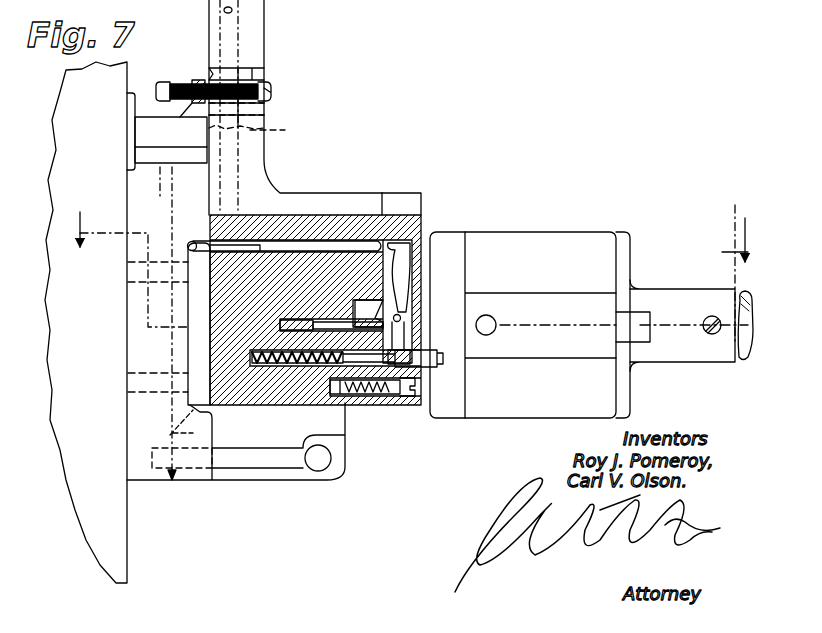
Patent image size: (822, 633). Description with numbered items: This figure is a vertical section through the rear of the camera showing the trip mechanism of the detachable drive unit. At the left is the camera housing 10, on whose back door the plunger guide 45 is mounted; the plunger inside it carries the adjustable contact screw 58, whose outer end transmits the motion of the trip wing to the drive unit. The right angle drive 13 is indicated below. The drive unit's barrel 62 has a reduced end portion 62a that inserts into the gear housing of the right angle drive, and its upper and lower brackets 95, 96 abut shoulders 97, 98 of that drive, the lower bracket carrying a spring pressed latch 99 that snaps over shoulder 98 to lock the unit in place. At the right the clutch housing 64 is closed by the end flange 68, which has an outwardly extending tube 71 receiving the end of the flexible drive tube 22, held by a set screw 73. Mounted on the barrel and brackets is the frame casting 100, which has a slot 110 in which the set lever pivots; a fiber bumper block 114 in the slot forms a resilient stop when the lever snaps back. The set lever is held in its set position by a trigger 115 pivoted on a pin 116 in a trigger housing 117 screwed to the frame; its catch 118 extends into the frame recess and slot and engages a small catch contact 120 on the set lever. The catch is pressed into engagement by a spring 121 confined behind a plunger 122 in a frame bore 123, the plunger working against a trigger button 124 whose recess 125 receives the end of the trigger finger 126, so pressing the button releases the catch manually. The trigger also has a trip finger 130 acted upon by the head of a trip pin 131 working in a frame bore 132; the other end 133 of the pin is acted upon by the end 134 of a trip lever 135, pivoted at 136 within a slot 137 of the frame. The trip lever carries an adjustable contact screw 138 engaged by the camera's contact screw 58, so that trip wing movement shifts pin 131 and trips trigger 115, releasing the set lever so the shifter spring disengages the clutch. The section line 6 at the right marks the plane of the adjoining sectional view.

The camera housing 10 is at (131, 81).
The right angle drive 13 is at (150, 487).
The flexible drive tube 22 is at (737, 353).
The plunger guide 45 is at (158, 133).
The adjustable contact screw 58 is at (176, 83).
The barrel 62 is at (200, 372).
The reduced end portion of barrel 62a is at (148, 312).
The clutch housing 64 is at (547, 250).
The end flange 68 is at (634, 262).
The outwardly extending tube 71 is at (666, 300).
The set screw 73 is at (710, 318).
The upper bracket 95 is at (188, 178).
The lower bracket 96 is at (157, 436).
The shoulder 97 is at (193, 238).
The shoulder 98 is at (193, 424).
The spring pressed latch 99 is at (250, 462).
The frame casting 100 is at (270, 165).
The slot 110 is at (345, 395).
The fiber bumper block 114 is at (285, 322).
The trigger 115 is at (404, 312).
The pin 116 is at (414, 322).
The trigger housing 117 is at (424, 226).
The catch 118 is at (402, 300).
The catch contact 120 is at (300, 353).
The spring 121 is at (283, 400).
The plunger 122 is at (315, 402).
The frame bore 123 is at (256, 400).
The trigger button 124 is at (438, 360).
The recess 125 is at (420, 381).
The trigger finger 126 is at (410, 342).
The trip finger 130 is at (399, 246).
The trip pin 131 is at (352, 212).
The frame bore 132 is at (285, 210).
The locking pin 133 is at (212, 264).
The end of trip lever 134 is at (203, 242).
The trip lever 135 is at (262, 127).
The pivot 136 is at (232, 11).
The slot 137 is at (263, 76).
The adjustable contact screw 138 is at (269, 97).
The section line 6 is at (410, 270).